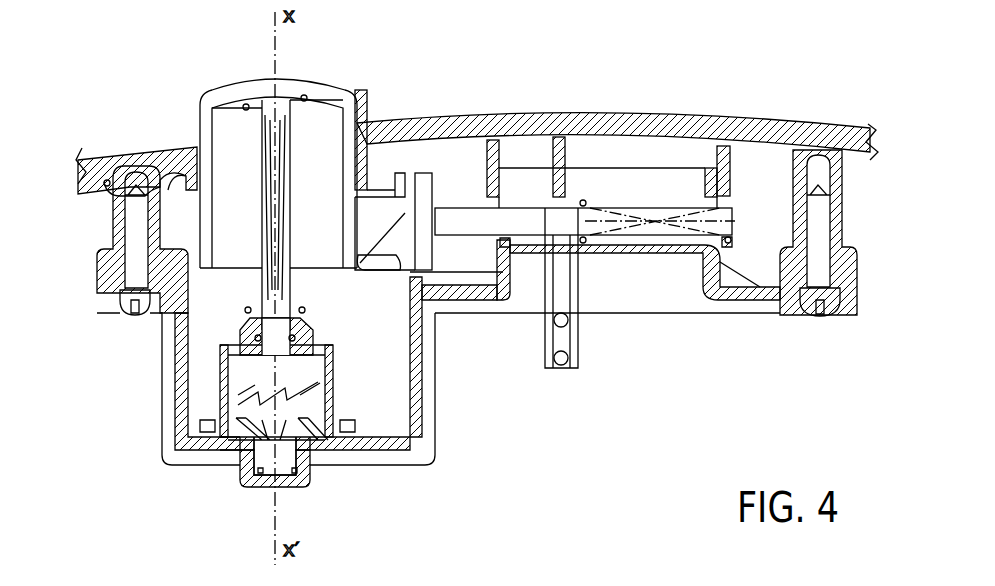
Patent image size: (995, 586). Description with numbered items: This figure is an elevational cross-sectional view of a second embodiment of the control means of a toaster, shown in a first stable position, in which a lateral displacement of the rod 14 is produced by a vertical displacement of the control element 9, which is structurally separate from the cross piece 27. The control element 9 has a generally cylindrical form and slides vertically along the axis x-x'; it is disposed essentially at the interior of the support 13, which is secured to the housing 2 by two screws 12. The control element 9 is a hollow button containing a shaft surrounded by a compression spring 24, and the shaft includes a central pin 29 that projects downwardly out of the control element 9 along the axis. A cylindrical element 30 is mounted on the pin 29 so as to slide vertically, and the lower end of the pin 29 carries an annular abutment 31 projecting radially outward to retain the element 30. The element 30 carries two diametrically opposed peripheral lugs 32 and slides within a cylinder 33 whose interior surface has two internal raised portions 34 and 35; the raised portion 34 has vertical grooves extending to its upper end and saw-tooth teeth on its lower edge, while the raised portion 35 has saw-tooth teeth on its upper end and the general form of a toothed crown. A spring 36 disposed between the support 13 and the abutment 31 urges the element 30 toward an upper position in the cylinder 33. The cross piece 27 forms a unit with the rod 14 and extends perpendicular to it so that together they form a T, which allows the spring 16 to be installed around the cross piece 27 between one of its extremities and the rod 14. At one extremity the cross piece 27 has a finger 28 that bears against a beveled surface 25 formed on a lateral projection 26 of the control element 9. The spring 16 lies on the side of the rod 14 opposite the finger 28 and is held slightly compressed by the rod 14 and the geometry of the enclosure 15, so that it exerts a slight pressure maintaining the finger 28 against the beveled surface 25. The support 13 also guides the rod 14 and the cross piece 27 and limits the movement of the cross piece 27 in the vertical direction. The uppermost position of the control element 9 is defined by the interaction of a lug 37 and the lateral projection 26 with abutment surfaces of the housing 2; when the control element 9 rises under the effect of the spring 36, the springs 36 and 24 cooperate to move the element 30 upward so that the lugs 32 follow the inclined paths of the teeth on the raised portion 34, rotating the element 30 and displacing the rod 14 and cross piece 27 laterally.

The housing 2 is at (470, 124).
The control element 9 is at (307, 82).
The screws 12 is at (125, 314).
The support 13 is at (100, 272).
The rod 14 is at (568, 290).
The enclosure 15 is at (675, 185).
The spring 16 is at (585, 200).
The compression spring 24 is at (350, 95).
The beveled surface 25 is at (405, 213).
The lateral projection 26 is at (378, 218).
The cross piece 27 is at (720, 222).
The finger 28 is at (370, 265).
The central pin 29 is at (290, 285).
The cylindrical element 30 is at (300, 320).
The annular abutment 31 is at (235, 330).
The peripheral lugs 32 is at (240, 350).
The cylinder 33 is at (330, 395).
The raised portion 34 is at (245, 382).
The raised portion 35 is at (305, 455).
The spring 36 is at (237, 457).
The lug 37 is at (183, 197).